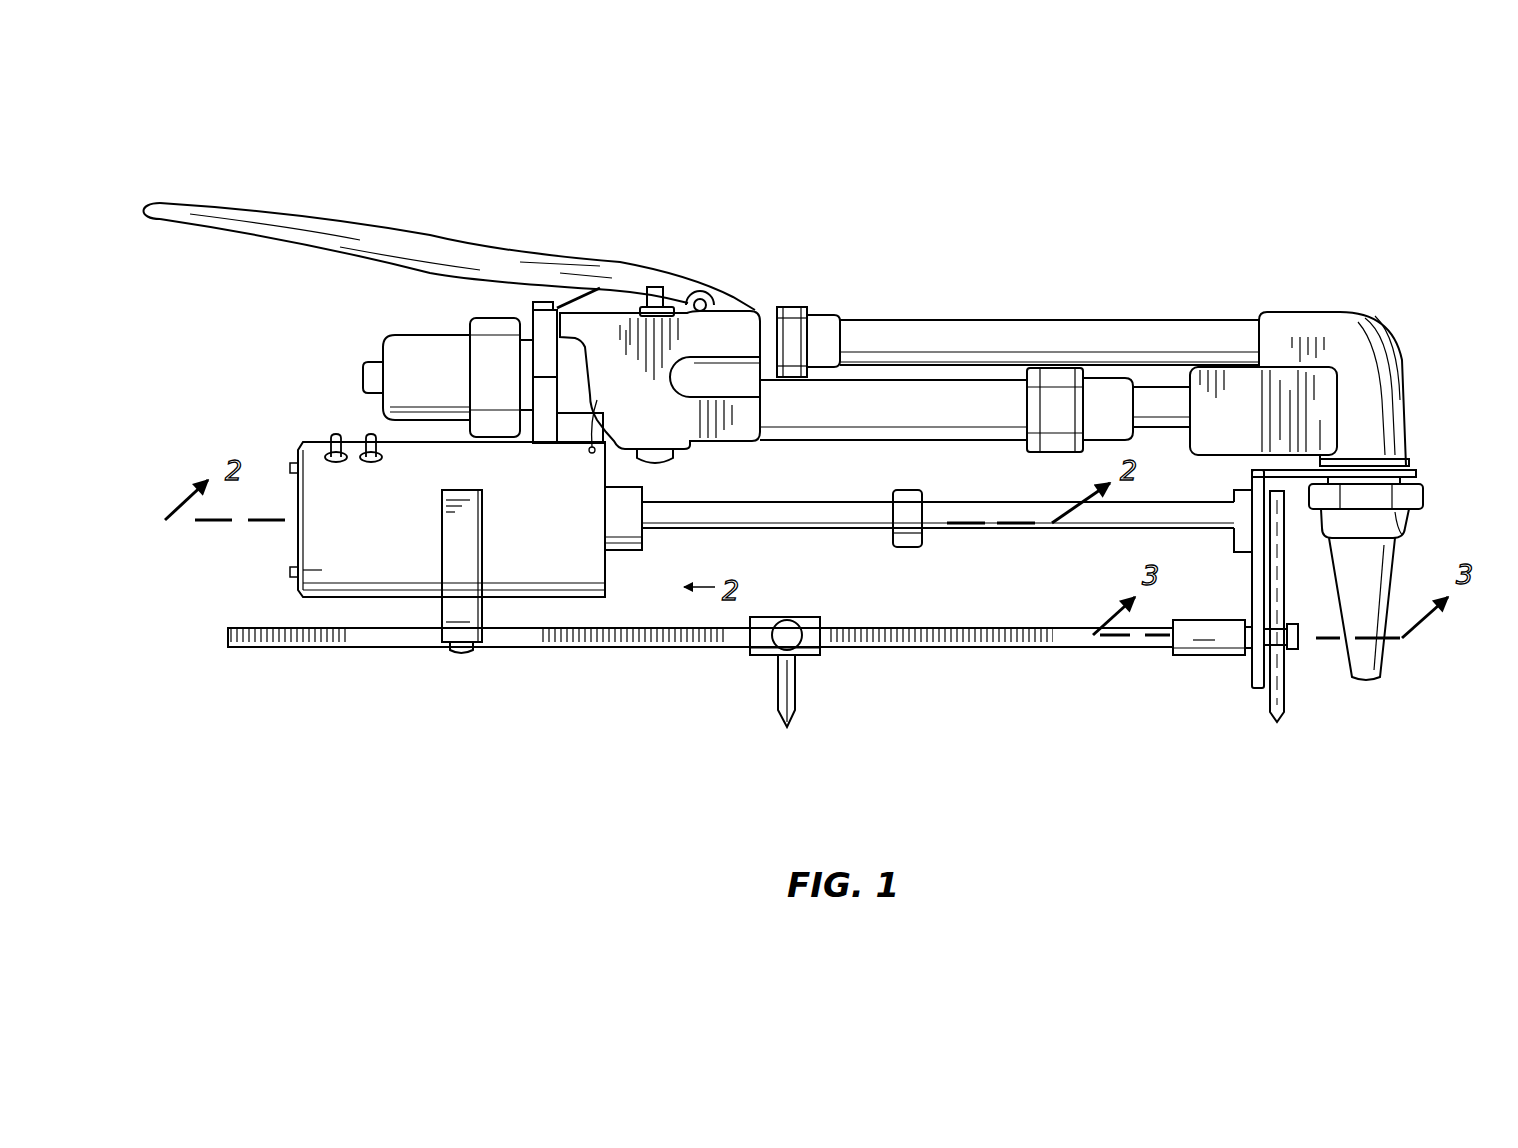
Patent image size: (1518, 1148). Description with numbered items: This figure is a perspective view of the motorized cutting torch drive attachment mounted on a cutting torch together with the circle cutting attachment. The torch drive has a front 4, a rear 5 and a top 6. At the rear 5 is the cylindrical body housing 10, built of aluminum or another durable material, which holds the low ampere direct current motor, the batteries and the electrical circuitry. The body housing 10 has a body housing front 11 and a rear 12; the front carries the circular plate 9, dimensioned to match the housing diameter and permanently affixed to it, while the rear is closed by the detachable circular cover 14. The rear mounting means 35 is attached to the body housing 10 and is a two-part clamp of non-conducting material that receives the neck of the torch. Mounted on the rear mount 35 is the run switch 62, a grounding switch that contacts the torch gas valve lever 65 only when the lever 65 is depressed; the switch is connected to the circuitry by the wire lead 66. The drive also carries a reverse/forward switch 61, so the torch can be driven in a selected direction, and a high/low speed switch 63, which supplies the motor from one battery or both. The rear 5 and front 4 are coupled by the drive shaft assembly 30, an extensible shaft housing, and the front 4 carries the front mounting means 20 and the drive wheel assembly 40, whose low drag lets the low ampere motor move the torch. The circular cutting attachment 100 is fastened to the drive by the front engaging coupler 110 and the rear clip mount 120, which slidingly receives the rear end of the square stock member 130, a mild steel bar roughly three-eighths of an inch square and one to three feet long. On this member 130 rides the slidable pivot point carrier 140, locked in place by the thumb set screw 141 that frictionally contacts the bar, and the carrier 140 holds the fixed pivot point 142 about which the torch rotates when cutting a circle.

The front 4 is at (1124, 427).
The rear 5 is at (438, 532).
The top 6 is at (837, 548).
The circular plate 9 is at (605, 573).
The body housing 10 is at (515, 600).
The body housing front 11 is at (620, 600).
The body housing rear 12 is at (290, 577).
The detachable circular cover 14 is at (449, 569).
The front mounting means 20 is at (1432, 470).
The drive shaft assembly 30 is at (1037, 548).
The rear mounting means 35 is at (583, 362).
The drive wheel assembly 40 is at (1245, 710).
The reverse/forward switch 61 is at (370, 435).
The run switch 62 is at (530, 291).
The high/low speed switch 63 is at (340, 440).
The gas valve lever 65 is at (400, 240).
The wire lead 66 is at (597, 398).
The circular cutting attachment 100 is at (740, 678).
The front engaging coupler 110 is at (1185, 680).
The rear clip mount 120 is at (442, 538).
The square stock member 130 is at (395, 648).
The pivot point carrier 140 is at (810, 655).
The thumb set screw 141 is at (800, 625).
The pivot point 142 is at (795, 718).